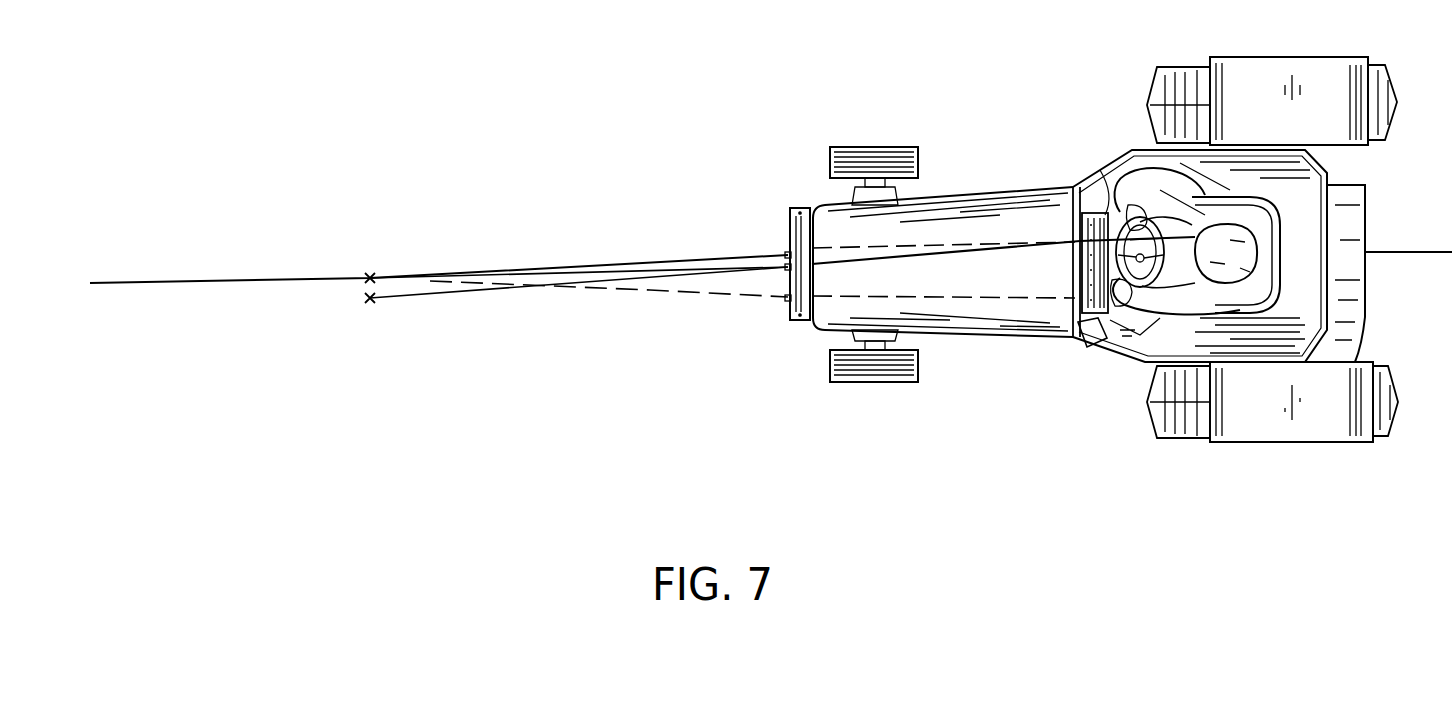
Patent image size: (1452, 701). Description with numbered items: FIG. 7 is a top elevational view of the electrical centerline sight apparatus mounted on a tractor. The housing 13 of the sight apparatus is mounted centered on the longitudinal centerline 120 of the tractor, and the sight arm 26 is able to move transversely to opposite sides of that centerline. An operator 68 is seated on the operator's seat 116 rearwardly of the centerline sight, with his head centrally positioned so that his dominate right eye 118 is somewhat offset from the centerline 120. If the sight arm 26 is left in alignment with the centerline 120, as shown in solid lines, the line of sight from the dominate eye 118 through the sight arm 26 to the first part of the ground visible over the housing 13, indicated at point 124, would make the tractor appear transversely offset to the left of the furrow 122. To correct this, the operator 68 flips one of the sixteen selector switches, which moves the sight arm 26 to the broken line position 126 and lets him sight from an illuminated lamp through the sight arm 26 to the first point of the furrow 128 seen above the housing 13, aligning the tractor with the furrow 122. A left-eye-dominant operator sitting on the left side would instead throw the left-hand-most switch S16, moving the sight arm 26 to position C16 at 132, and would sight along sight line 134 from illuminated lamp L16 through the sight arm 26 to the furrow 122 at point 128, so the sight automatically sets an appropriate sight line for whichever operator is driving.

The housing 13 is at (803, 223).
The sight arm 26 is at (787, 271).
The operator 68 is at (1228, 213).
The operator's seat 116 is at (1276, 229).
The dominate right eye 118 is at (1190, 235).
The longitudinal centerline 120 is at (986, 200).
The furrow 122 is at (1408, 250).
The point 124 is at (370, 302).
The broken line position 126 is at (786, 253).
The first point of the furrow 128 is at (368, 275).
The position C16 132 is at (787, 302).
The sight line 134 is at (628, 293).
The lamp L16 is at (1080, 336).
The selector switch S16 is at (1103, 312).